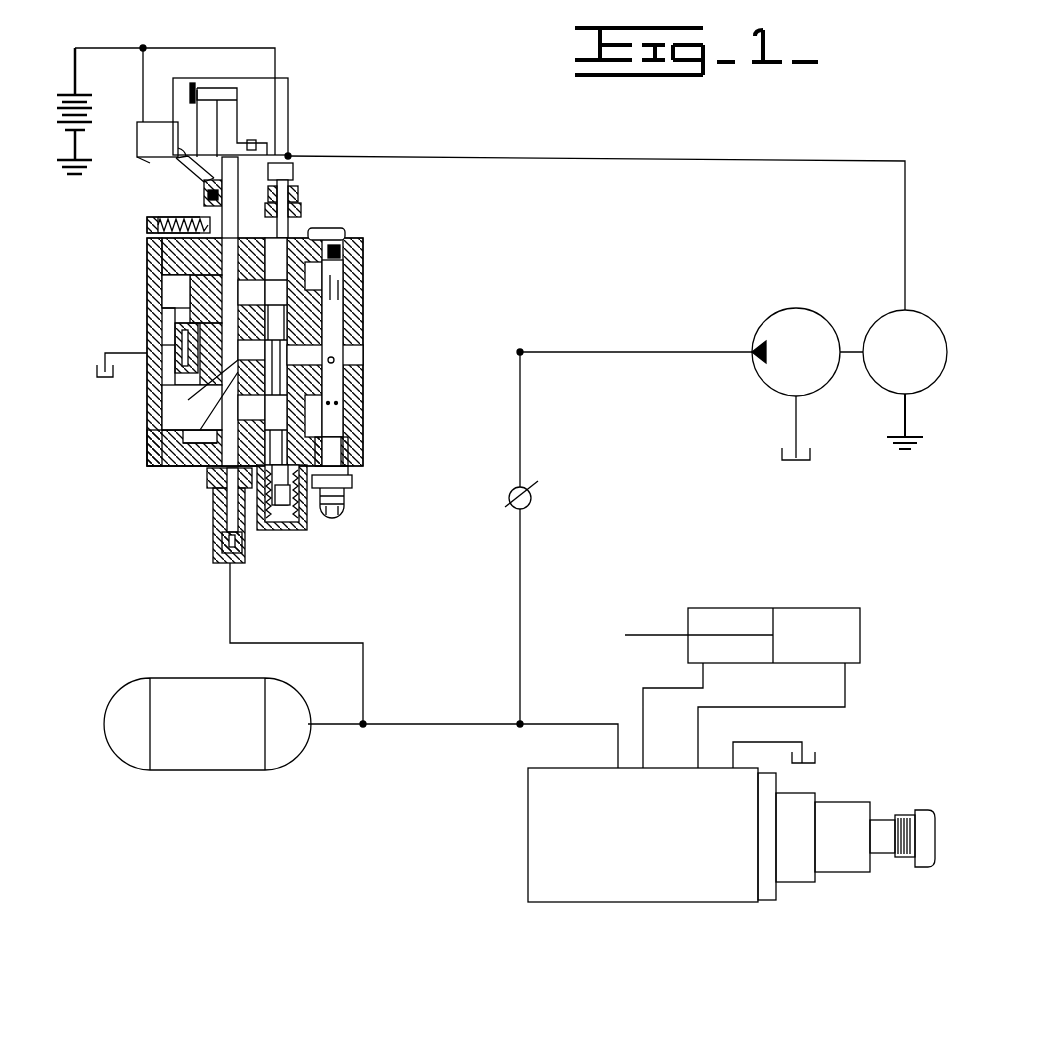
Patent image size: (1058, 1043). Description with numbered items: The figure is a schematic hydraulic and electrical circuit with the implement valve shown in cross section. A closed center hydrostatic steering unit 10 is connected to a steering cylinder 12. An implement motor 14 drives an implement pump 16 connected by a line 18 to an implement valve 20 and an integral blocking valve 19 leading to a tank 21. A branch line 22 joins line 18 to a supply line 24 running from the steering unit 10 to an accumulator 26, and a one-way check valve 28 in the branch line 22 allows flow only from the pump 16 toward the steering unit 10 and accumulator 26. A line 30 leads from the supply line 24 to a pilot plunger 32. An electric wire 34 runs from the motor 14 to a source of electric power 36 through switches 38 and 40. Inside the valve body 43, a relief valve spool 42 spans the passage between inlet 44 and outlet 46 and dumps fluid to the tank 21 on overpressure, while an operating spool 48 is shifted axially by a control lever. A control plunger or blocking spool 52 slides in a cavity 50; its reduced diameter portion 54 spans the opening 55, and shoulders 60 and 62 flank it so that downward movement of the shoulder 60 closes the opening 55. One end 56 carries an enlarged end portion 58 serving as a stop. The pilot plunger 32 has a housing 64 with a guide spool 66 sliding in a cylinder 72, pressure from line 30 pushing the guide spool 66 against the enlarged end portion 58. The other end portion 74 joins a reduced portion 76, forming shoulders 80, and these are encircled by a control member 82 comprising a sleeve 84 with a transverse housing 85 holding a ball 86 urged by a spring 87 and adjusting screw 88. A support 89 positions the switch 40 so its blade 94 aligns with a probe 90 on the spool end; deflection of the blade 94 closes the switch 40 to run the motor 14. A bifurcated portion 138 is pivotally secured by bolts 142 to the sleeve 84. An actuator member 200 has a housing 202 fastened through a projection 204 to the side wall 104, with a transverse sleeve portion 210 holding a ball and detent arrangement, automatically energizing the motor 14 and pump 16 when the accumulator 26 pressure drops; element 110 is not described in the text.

The closed center hydrostatic steering unit 10 is at (632, 905).
The steering cylinder 12 is at (797, 608).
The implement motor 14 is at (888, 318).
The implement pump 16 is at (795, 318).
The line 18 is at (616, 352).
The blocking valve 19 is at (163, 420).
The implement valve 20 is at (365, 264).
The tank 21 is at (97, 378).
The branch line 22 is at (521, 430).
The supply line 24 is at (440, 730).
The accumulator 26 is at (208, 772).
The one-way check valve 28 is at (530, 490).
The line 30 is at (287, 643).
The pilot plunger 32 is at (211, 501).
The electric wire 34 is at (567, 160).
The source of electric power 36 is at (72, 92).
The switch 38 is at (283, 163).
The switch 40 is at (140, 122).
The relief valve spool 42 is at (336, 384).
The valve body 43 is at (352, 434).
The inlet 44 is at (364, 346).
The outlet 46 is at (147, 348).
The operating plunger or spool 48 is at (322, 230).
The cavity 50 is at (200, 466).
The control plunger or blocking spool 52 is at (172, 322).
The reduced diameter portion 54 is at (162, 341).
The opening 55 is at (170, 388).
The one end 56 is at (183, 447).
The enlarged end portion 58 is at (207, 482).
The shoulder 60 is at (178, 336).
The shoulder 62 is at (200, 395).
The housing 64 is at (250, 540).
The guide spool 66 is at (226, 520).
The cylinder 72 is at (228, 545).
The end portion 74 is at (177, 291).
The reduced portion 76 is at (204, 192).
The shoulders 80 is at (208, 198).
The control member 82 is at (182, 168).
The sleeve 84 is at (244, 311).
The transverse cylindrically-shaped housing 85 is at (160, 218).
The ball 86 is at (160, 258).
The spring 87 is at (162, 236).
The adjusting screw 88 is at (147, 225).
The support 89 is at (137, 159).
The probe 90 is at (197, 152).
The blade 94 is at (163, 145).
The side wall 104 is at (192, 83).
The nut 110 is at (299, 192).
The bifurcated portion 138 is at (288, 172).
The bolts 142 is at (300, 211).
The actuator member 200 is at (236, 80).
The housing 202 is at (236, 110).
The projection 204 is at (199, 90).
The sleeve portion 210 is at (252, 140).